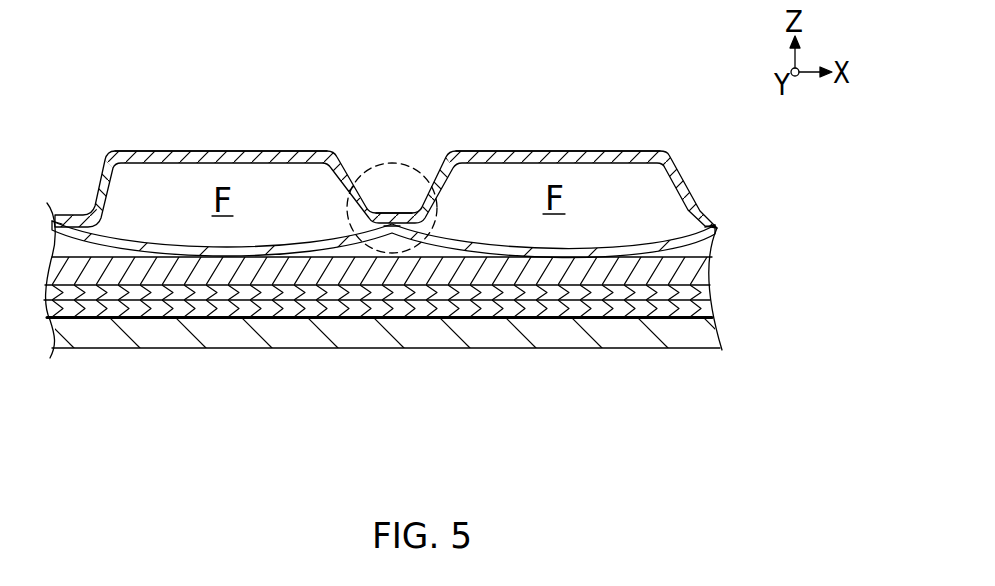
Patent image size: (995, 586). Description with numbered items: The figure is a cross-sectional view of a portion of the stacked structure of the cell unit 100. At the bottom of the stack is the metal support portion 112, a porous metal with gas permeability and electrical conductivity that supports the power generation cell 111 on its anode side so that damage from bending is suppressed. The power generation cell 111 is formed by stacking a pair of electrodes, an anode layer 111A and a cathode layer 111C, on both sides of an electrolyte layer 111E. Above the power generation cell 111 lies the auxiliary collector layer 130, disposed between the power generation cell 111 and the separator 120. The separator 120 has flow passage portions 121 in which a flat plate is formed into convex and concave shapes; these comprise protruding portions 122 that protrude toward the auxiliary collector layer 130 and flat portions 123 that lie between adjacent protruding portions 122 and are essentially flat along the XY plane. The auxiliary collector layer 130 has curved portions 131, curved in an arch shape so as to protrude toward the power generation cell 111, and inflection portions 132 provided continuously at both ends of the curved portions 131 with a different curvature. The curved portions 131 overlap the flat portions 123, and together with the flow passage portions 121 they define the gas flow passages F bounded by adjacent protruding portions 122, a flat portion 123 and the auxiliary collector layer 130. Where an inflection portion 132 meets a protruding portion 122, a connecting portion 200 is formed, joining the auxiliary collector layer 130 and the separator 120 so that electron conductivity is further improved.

The cell unit 100 is at (75, 38).
The power generation cell 111 is at (800, 262).
The cathode layer 111C is at (707, 271).
The electrolyte layer 111E is at (697, 293).
The anode layer 111A is at (697, 310).
The metal support portion 112 is at (693, 333).
The separator 120 is at (678, 173).
The flow passage portions 121 is at (602, 82).
The protruding portions 122 is at (392, 226).
The flat portions 123 is at (233, 151).
The auxiliary collector layer 130 is at (383, 354).
The curved portions 131 is at (228, 247).
The inflection portions 132 is at (713, 422).
The connecting portion 200 is at (412, 164).